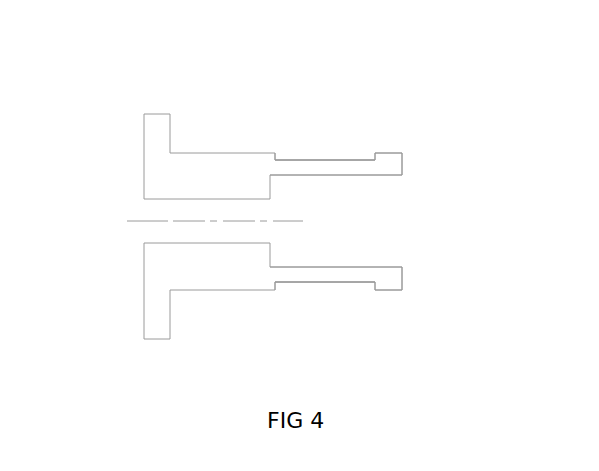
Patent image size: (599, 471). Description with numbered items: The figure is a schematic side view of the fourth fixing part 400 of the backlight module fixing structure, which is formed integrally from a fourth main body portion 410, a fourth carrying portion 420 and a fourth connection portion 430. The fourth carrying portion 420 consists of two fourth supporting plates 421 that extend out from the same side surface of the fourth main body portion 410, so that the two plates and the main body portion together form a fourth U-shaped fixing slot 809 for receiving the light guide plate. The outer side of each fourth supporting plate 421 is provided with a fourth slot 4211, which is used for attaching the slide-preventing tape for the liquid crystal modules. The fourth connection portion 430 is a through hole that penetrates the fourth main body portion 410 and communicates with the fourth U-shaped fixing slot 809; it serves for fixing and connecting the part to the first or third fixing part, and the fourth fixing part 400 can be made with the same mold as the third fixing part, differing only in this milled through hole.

The fourth fixing part 400 is at (284, 49).
The fourth main body portion 410 is at (188, 283).
The fourth carrying portion 420 is at (368, 125).
The fourth supporting plate 421 is at (390, 162).
The fourth slot 4211 is at (334, 163).
The fourth connection portion 430 is at (167, 221).
The fourth U-shaped fixing slot 809 is at (315, 218).